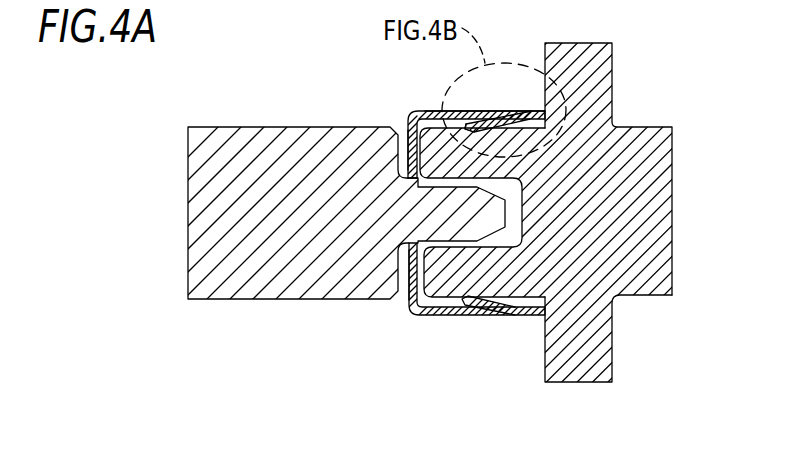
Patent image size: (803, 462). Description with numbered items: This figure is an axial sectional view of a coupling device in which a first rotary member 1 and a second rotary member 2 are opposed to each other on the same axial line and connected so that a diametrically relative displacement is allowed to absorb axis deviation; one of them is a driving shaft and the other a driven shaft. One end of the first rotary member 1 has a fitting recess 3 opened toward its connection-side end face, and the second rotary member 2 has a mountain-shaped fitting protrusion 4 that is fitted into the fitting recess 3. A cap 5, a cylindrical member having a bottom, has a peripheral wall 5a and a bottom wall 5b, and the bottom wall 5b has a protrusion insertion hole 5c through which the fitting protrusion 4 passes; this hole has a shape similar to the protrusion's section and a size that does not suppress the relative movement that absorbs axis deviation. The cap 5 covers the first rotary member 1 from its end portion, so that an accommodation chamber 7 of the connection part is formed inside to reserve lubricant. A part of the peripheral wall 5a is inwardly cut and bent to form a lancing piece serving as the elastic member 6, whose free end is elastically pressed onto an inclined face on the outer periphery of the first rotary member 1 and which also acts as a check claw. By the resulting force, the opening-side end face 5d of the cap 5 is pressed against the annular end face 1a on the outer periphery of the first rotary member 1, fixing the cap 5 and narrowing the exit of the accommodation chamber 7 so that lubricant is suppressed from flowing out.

The first rotary member 1 is at (622, 314).
The annular end face 1a is at (572, 343).
The second rotary member 2 is at (235, 124).
The fitting recess 3 is at (513, 213).
The fitting protrusion 4 is at (419, 322).
The cap 5 is at (411, 109).
The peripheral wall 5a is at (522, 108).
The bottom wall 5b is at (410, 128).
The protrusion insertion hole 5c is at (410, 181).
The opening-side end face 5d is at (525, 116).
The elastic member 6 is at (468, 130).
The accommodation chamber 7 is at (443, 300).